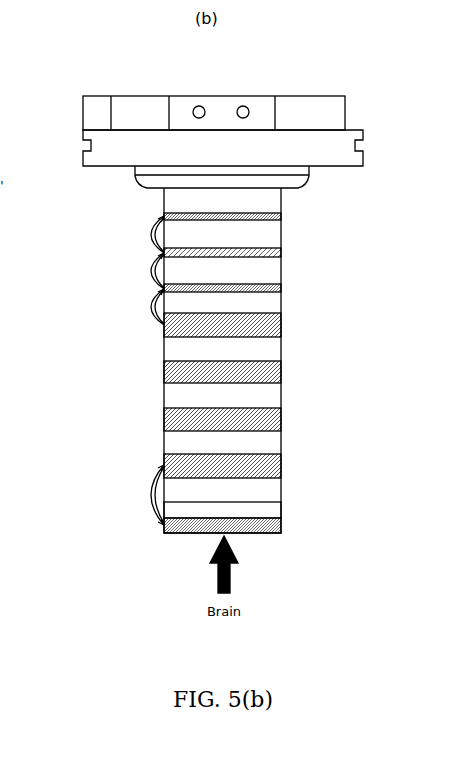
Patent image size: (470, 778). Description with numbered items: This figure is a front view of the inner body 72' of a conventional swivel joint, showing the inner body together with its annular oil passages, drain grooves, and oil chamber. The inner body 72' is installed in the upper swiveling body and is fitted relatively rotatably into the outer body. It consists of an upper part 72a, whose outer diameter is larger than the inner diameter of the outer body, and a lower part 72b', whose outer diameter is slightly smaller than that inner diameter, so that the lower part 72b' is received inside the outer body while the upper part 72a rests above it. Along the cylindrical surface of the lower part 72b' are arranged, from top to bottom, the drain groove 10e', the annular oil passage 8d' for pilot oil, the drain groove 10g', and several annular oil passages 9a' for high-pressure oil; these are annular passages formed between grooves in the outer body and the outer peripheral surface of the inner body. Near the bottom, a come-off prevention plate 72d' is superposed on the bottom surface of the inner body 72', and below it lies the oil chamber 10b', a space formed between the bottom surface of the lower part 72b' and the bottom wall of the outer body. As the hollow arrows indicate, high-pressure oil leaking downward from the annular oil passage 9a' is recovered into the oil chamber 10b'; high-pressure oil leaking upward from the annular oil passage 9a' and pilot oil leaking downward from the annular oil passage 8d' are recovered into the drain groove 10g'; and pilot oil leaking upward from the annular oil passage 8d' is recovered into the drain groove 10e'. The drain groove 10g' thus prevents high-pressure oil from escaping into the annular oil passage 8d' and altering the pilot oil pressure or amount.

The inner body 72' is at (214, 81).
The upper part 72a is at (369, 137).
The lower part 72b' is at (267, 360).
The drain groove 10e' is at (247, 216).
The annular oil passage 8d' is at (243, 250).
The drain groove 10g' is at (247, 288).
The annular oil passage 9a' is at (243, 395).
The come-off prevention plate 72d' is at (247, 508).
The oil chamber 10b' is at (247, 530).